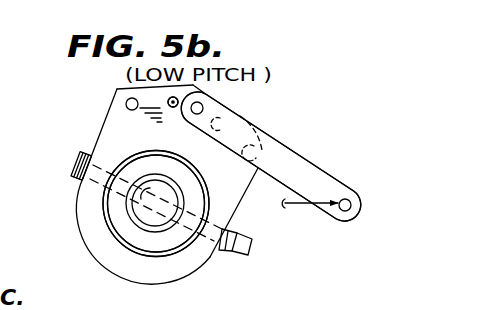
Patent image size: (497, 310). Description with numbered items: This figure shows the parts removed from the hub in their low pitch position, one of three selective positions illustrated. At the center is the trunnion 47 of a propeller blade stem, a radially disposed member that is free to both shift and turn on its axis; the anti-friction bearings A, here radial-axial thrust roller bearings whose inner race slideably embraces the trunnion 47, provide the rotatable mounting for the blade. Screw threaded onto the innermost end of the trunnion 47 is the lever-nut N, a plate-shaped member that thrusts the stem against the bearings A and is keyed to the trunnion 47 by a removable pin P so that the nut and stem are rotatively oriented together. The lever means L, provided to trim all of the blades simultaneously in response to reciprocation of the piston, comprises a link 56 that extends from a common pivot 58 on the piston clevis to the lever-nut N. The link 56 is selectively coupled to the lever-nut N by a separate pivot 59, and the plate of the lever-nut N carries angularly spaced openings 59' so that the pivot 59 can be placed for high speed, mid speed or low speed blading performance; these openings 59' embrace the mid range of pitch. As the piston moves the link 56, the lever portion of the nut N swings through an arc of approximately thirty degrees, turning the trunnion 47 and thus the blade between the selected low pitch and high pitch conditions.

The trunnion 47 is at (142, 248).
The link 56 is at (303, 158).
The common pivot 58 is at (362, 207).
The pivot 59 is at (226, 104).
The angularly spaced openings 59' is at (202, 93).
The lever means L is at (268, 127).
The lever-nut N is at (125, 124).
The removable pin P is at (72, 177).
The anti-friction bearings A is at (112, 240).